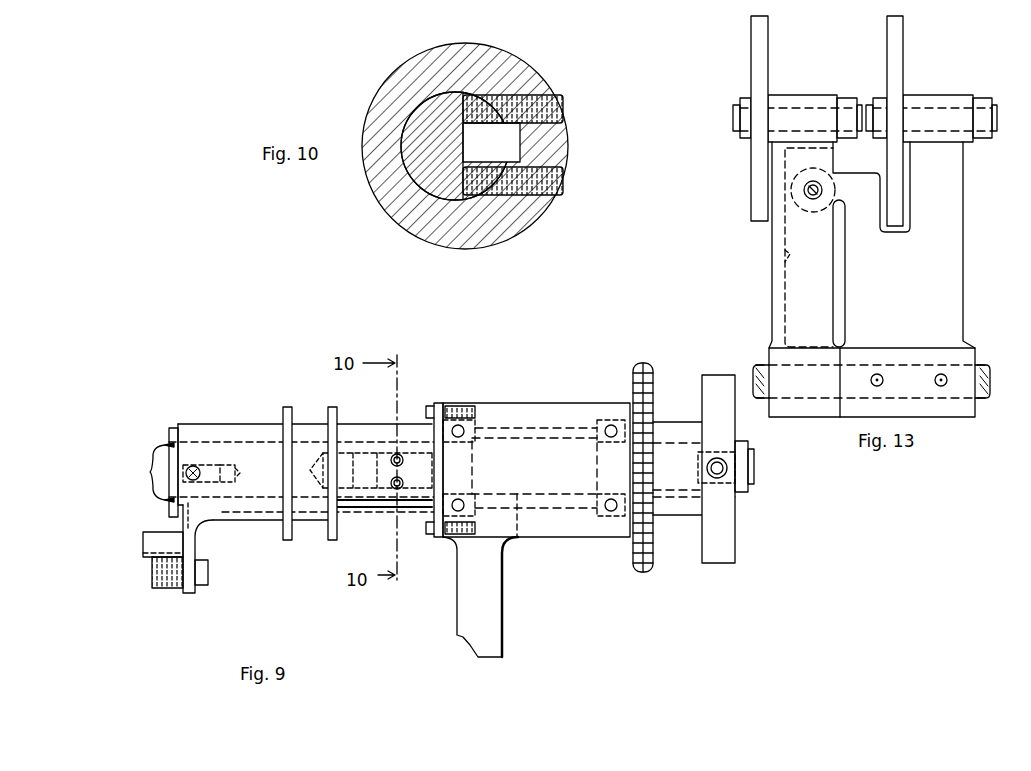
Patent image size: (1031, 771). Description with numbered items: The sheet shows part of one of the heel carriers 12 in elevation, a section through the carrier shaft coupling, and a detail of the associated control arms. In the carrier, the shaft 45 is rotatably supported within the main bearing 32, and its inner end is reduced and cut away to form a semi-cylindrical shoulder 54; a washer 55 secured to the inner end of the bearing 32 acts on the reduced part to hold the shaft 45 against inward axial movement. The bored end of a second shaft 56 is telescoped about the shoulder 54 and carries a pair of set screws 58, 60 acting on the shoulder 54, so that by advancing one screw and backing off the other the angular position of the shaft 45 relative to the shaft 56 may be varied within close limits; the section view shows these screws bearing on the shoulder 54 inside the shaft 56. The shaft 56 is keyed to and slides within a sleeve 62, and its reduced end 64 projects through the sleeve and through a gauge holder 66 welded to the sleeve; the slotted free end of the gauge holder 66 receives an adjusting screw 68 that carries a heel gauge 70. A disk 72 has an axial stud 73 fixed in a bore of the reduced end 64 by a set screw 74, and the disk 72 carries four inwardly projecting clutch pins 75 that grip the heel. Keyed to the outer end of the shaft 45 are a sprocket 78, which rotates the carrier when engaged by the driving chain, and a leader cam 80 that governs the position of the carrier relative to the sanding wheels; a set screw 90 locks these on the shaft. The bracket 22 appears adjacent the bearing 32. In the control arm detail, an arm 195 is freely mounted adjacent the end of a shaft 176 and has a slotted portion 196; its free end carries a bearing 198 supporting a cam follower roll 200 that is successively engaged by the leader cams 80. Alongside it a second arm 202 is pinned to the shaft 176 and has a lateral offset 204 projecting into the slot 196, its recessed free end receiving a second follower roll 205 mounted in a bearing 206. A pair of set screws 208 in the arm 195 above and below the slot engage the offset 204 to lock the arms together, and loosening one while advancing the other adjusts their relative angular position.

In FIG. 9, the carrier 12 is at (313, 553).
In FIG. 9, the bracket 22 is at (500, 612).
In FIG. 9, the main bearing 32 is at (526, 403).
In FIG. 9, the shaft 45 is at (517, 537).
In FIG. 10, the shoulder 54 is at (466, 146).
In FIG. 9, the shoulder 54 is at (384, 514).
In FIG. 9, the washer 55 is at (440, 420).
In FIG. 10, the second shaft 56 is at (512, 66).
In FIG. 9, the second shaft 56 is at (265, 443).
In FIG. 10, the set screw 58 is at (558, 123).
In FIG. 9, the set screw 58 is at (398, 455).
In FIG. 10, the set screw 60 is at (558, 178).
In FIG. 9, the set screw 60 is at (392, 481).
In FIG. 9, the sleeve 62 is at (240, 424).
In FIG. 9, the reduced end 64 is at (183, 528).
In FIG. 9, the gauge holder 66 is at (196, 545).
In FIG. 9, the adjusting screw 68 is at (208, 573).
In FIG. 9, the heel gauge 70 is at (143, 548).
In FIG. 9, the disk 72 is at (173, 428).
In FIG. 9, the axial stud 73 is at (236, 473).
In FIG. 9, the set screw 74 is at (198, 468).
In FIG. 9, the clutch pins 75 is at (147, 472).
In FIG. 9, the sprocket 78 is at (633, 376).
In FIG. 9, the leader cam 80 is at (708, 390).
In FIG. 9, the set screw 90 is at (722, 468).
In FIG. 13, the shaft 176 is at (762, 360).
In FIG. 13, the arm 195 is at (828, 296).
In FIG. 13, the slotted portion 196 is at (786, 256).
In FIG. 13, the bearing 198 is at (817, 95).
In FIG. 13, the cam follower roll 200 is at (756, 52).
In FIG. 13, the second arm 202 is at (926, 296).
In FIG. 13, the lateral offset 204 is at (818, 170).
In FIG. 13, the second follower roll 205 is at (897, 72).
In FIG. 13, the bearing 206 is at (918, 95).
In FIG. 13, the set screws 208 is at (812, 198).